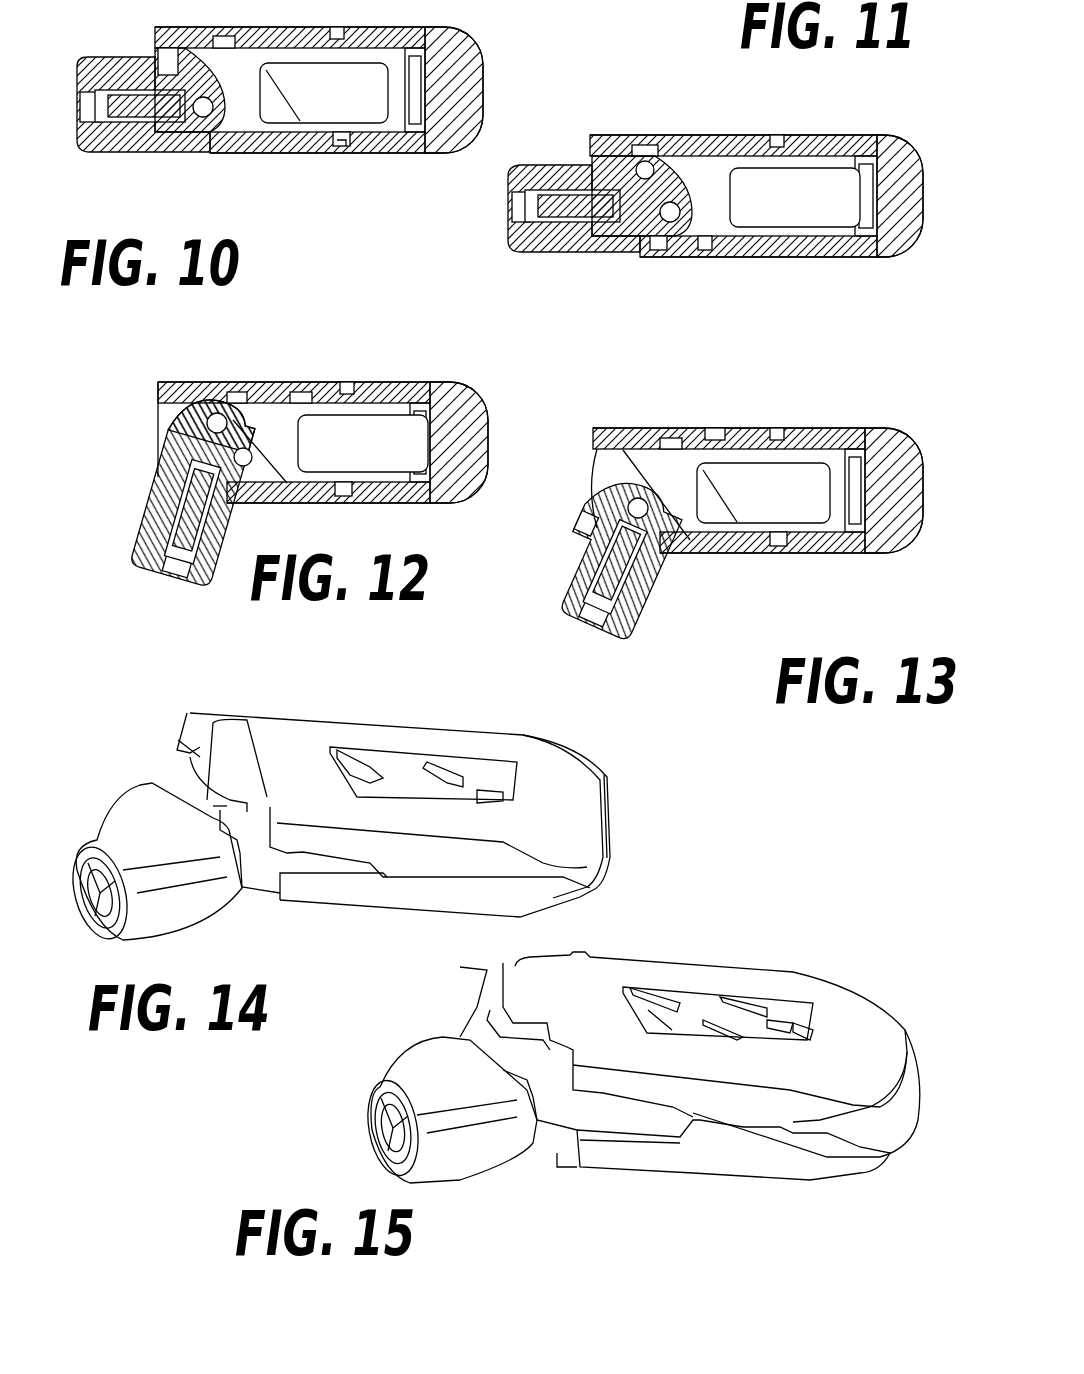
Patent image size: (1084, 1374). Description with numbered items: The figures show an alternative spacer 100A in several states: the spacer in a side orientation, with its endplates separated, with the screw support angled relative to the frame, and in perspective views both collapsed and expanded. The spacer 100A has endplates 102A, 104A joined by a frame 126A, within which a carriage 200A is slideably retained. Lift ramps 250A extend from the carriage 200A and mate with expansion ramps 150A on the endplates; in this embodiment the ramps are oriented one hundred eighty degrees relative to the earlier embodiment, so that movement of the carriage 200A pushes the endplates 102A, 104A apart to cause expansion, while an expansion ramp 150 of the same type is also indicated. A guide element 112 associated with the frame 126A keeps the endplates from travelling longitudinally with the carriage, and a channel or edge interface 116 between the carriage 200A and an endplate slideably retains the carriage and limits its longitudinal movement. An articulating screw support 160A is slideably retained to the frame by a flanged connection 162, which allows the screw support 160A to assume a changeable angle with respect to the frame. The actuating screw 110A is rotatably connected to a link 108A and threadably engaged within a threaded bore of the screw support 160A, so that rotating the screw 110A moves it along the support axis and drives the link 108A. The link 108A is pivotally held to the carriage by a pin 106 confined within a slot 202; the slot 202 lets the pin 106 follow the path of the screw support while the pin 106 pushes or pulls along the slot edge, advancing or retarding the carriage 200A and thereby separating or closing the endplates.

In FIG. 11, the spacer 100A is at (648, 292).
In FIG. 12, the spacer 100A is at (492, 399).
In FIG. 13, the spacer 100A is at (640, 418).
In FIG. 14, the spacer 100A is at (627, 817).
In FIG. 15, the spacer 100A is at (778, 903).
In FIG. 14, the endplate 102A is at (600, 770).
In FIG. 15, the endplate 102A is at (890, 1012).
In FIG. 10, the endplate 104A is at (484, 58).
In FIG. 11, the endplate 104A is at (916, 228).
In FIG. 12, the endplate 104A is at (390, 392).
In FIG. 13, the endplate 104A is at (900, 553).
In FIG. 14, the endplate 104A is at (545, 895).
In FIG. 15, the endplate 104A is at (780, 1165).
In FIG. 10, the pin 106 is at (214, 108).
In FIG. 11, the pin 106 is at (678, 206).
In FIG. 12, the pin 106 is at (208, 418).
In FIG. 10, the link 108A is at (167, 133).
In FIG. 11, the link 108A is at (630, 256).
In FIG. 12, the link 108A is at (180, 443).
In FIG. 10, the actuating screw 110A is at (147, 113).
In FIG. 11, the actuating screw 110A is at (598, 185).
In FIG. 13, the actuating screw 110A is at (600, 548).
In FIG. 14, the actuating screw 110A is at (95, 885).
In FIG. 14, the guide element 112 is at (266, 790).
In FIG. 11, the channel or edge interface 116 is at (707, 250).
In FIG. 12, the channel or edge interface 116 is at (300, 396).
In FIG. 14, the frame 126A is at (200, 722).
In FIG. 15, the frame 126A is at (497, 985).
In FIG. 15, the expansion ramp 150 is at (652, 1008).
In FIG. 10, the expansion ramp 150A is at (354, 144).
In FIG. 11, the expansion ramp 150A is at (662, 262).
In FIG. 13, the expansion ramp 150A is at (715, 425).
In FIG. 14, the expansion ramp 150A is at (425, 763).
In FIG. 15, the expansion ramp 150A is at (755, 1010).
In FIG. 10, the screw support 160A is at (130, 150).
In FIG. 11, the screw support 160A is at (560, 252).
In FIG. 12, the screw support 160A is at (203, 573).
In FIG. 13, the screw support 160A is at (647, 620).
In FIG. 14, the screw support 160A is at (197, 893).
In FIG. 15, the screw support 160A is at (410, 1073).
In FIG. 14, the flanged connection 162 is at (173, 757).
In FIG. 15, the flanged connection 162 is at (487, 1037).
In FIG. 10, the carriage 200A is at (307, 130).
In FIG. 11, the carriage 200A is at (847, 232).
In FIG. 12, the carriage 200A is at (357, 477).
In FIG. 13, the carriage 200A is at (712, 532).
In FIG. 11, the slot 202 is at (650, 162).
In FIG. 11, the lift ramp 250A is at (792, 148).
In FIG. 14, the lift ramp 250A is at (395, 768).
In FIG. 15, the lift ramp 250A is at (730, 1030).